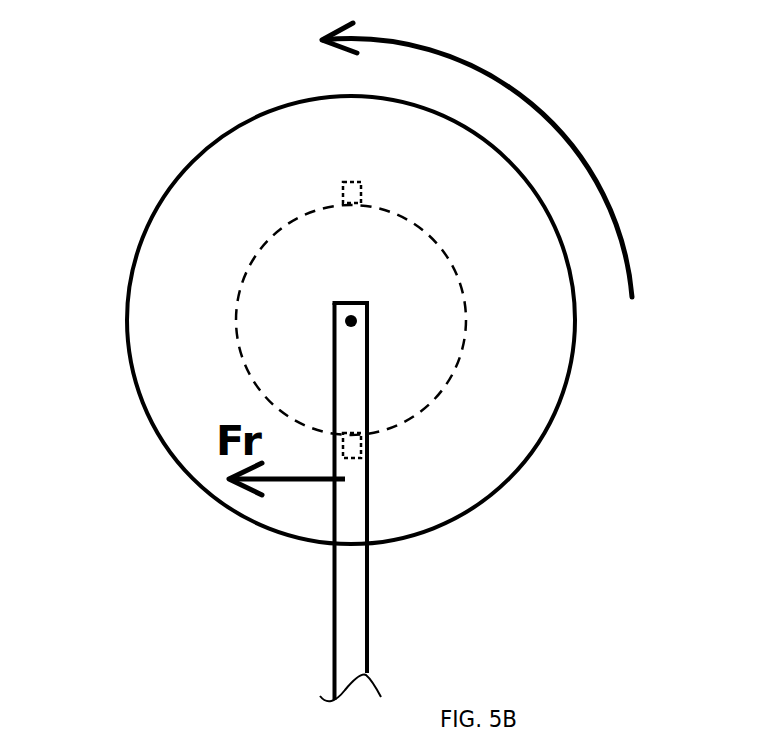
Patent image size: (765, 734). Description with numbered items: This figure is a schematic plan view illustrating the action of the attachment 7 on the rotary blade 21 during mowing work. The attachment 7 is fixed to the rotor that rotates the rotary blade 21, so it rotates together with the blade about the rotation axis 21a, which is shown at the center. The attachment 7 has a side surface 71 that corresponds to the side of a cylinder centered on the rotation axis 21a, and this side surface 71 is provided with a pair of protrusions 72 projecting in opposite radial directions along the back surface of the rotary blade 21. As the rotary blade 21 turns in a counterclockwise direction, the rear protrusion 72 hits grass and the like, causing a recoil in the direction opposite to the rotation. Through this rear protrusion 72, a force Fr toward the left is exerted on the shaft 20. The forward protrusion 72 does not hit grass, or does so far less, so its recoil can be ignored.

The attachment 7 is at (234, 298).
The shaft 20 is at (369, 580).
The rotary blade 21 is at (576, 350).
The rotation axis 21a is at (356, 318).
The side surface 71 is at (265, 238).
The protrusions 72 is at (345, 185).